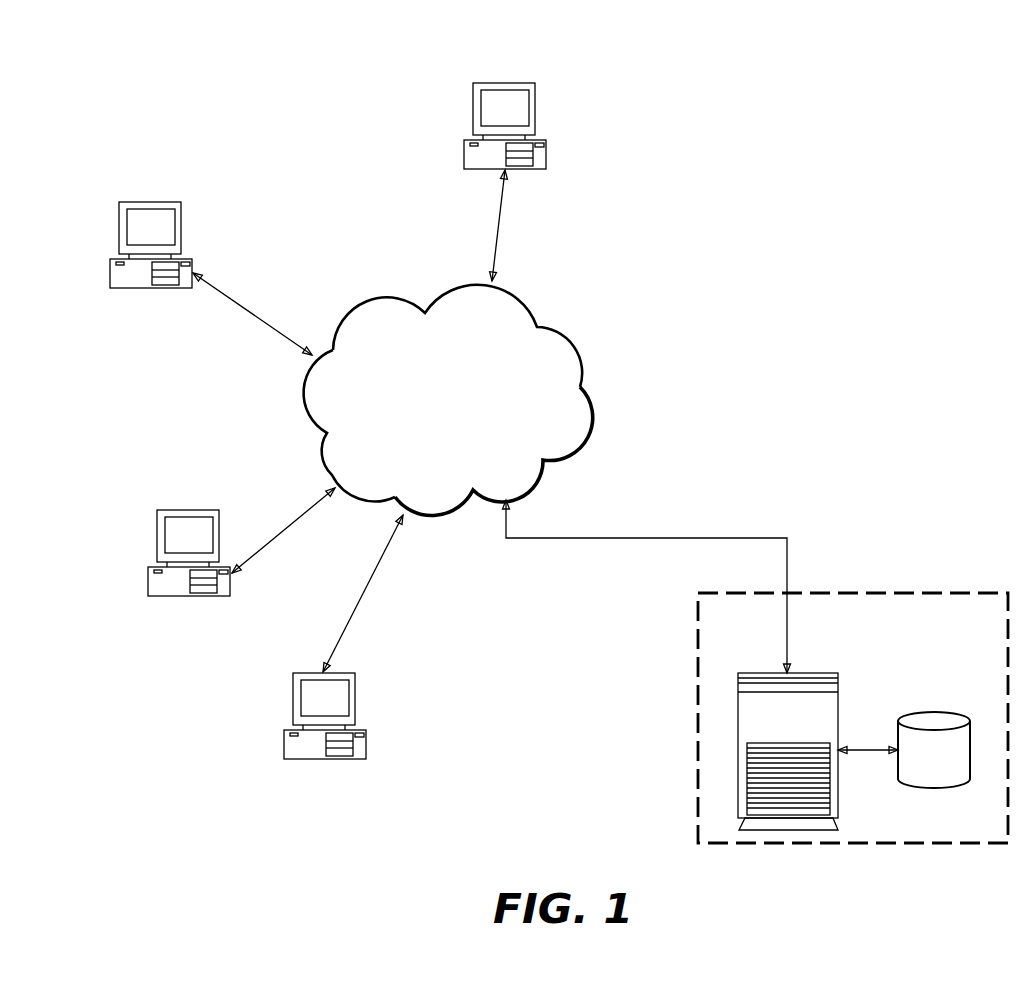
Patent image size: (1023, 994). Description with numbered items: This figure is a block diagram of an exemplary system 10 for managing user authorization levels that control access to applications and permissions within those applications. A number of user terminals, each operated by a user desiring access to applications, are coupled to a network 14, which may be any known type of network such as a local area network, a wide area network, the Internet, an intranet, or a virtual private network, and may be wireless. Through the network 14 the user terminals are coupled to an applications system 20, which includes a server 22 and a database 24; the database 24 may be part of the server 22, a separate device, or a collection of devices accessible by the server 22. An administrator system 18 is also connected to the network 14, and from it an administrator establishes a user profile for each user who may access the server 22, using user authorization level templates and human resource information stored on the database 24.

The system 10 is at (295, 133).
The network 14 is at (377, 302).
The administrator system 18 is at (499, 83).
The applications system 20 is at (925, 591).
The server 22 is at (815, 673).
The database 24 is at (930, 711).